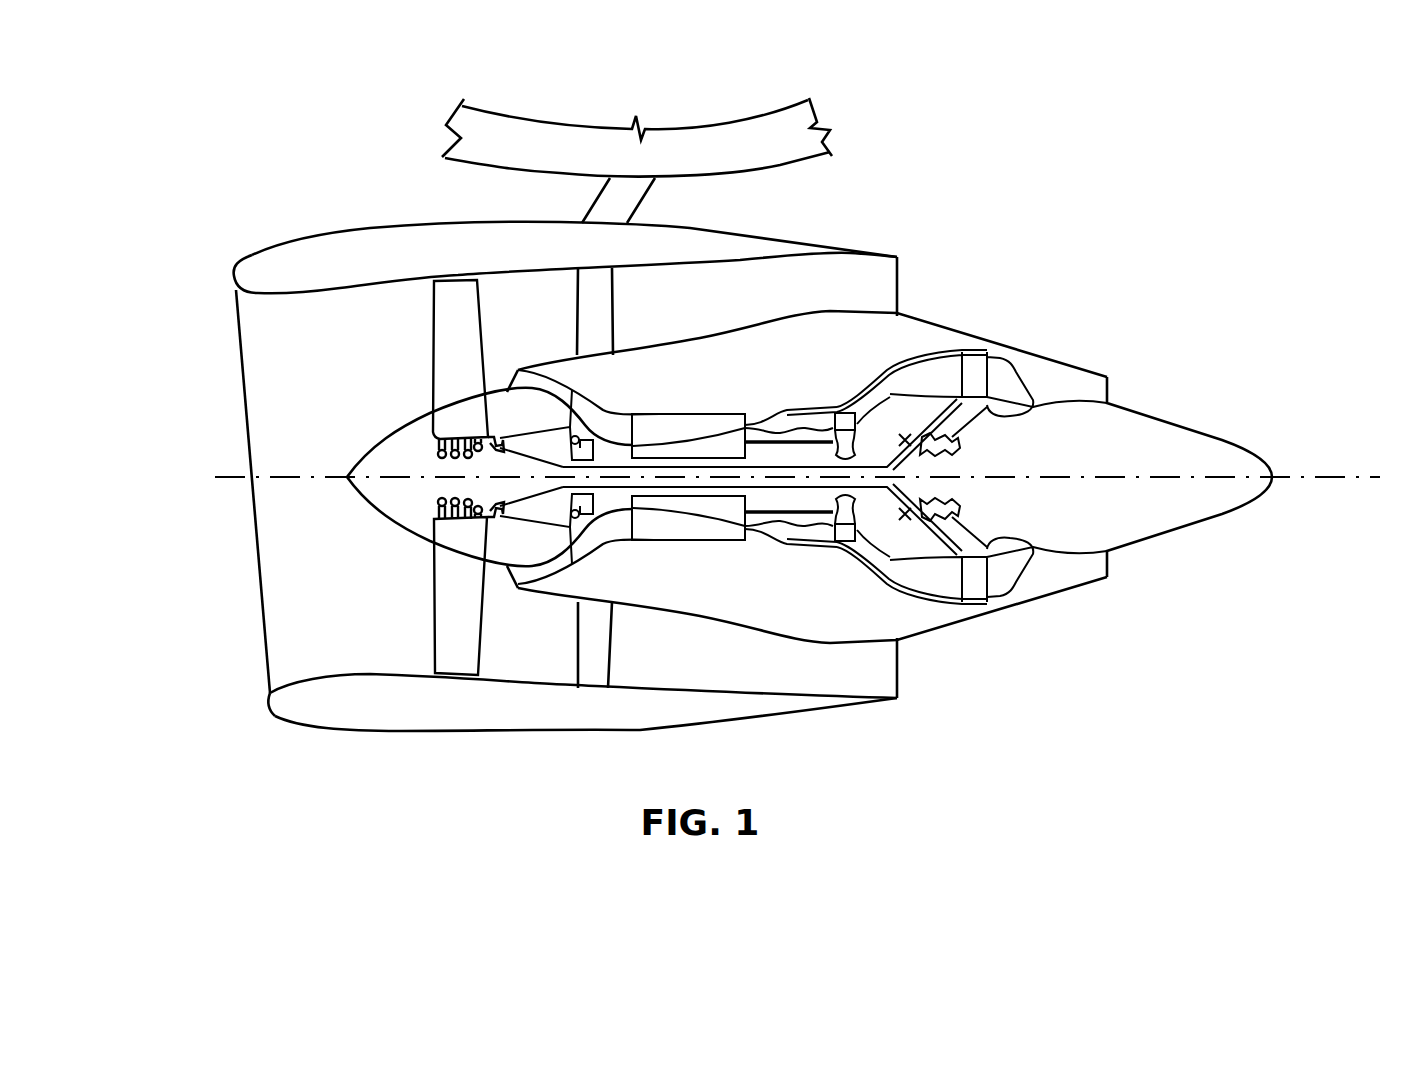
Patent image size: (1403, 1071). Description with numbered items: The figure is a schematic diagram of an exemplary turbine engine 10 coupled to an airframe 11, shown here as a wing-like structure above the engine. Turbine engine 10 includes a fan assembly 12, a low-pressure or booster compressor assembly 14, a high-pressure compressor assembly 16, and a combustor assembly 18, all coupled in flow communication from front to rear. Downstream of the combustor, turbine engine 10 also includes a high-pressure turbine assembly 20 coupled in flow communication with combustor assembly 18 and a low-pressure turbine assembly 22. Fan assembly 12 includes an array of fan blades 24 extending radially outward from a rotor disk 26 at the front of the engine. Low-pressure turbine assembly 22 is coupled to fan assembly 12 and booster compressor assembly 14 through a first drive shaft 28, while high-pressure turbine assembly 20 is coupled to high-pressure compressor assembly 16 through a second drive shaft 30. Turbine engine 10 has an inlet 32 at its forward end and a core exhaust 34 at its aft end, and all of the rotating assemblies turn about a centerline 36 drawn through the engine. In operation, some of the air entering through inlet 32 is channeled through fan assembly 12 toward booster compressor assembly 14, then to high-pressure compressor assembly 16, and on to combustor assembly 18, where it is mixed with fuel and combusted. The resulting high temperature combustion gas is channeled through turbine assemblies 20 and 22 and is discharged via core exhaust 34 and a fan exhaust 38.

The turbine engine 10 is at (1045, 201).
The airframe 11 is at (687, 123).
The fan assembly 12 is at (408, 315).
The booster compressor assembly 14 is at (499, 376).
The high-pressure compressor assembly 16 is at (665, 407).
The combustor assembly 18 is at (793, 398).
The high-pressure turbine assembly 20 is at (851, 386).
The low-pressure turbine assembly 22 is at (931, 341).
The fan blades 24 is at (445, 352).
The rotor disk 26 is at (396, 465).
The first drive shaft 28 is at (608, 465).
The second drive shaft 30 is at (883, 472).
The inlet 32 is at (216, 311).
The core exhaust 34 is at (1129, 383).
The centerline 36 is at (1321, 472).
The fan exhaust 38 is at (926, 659).